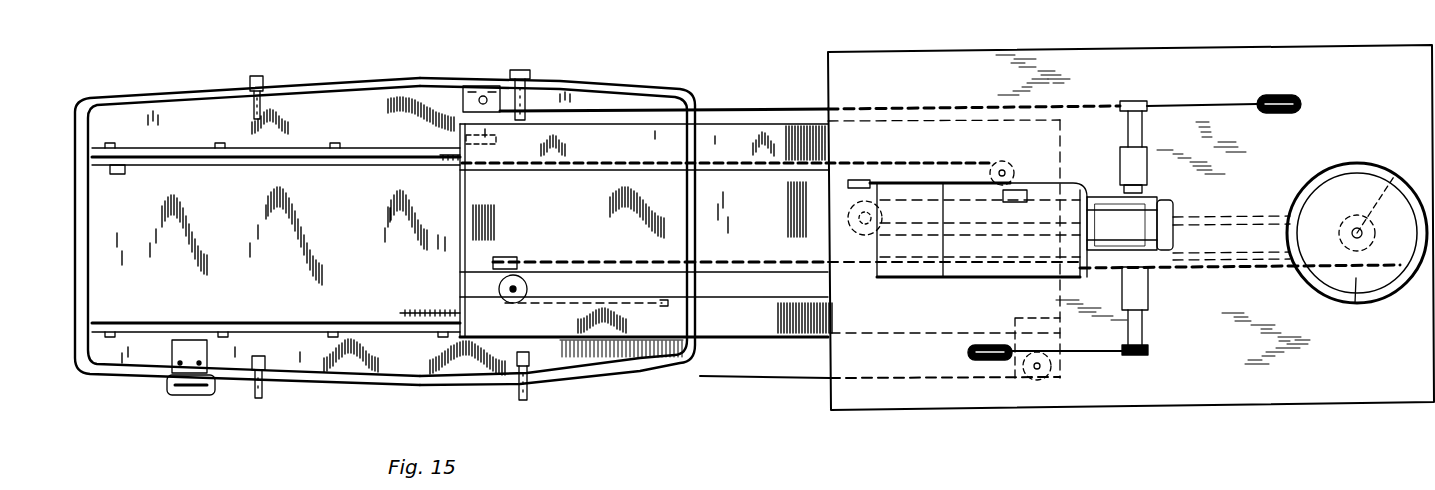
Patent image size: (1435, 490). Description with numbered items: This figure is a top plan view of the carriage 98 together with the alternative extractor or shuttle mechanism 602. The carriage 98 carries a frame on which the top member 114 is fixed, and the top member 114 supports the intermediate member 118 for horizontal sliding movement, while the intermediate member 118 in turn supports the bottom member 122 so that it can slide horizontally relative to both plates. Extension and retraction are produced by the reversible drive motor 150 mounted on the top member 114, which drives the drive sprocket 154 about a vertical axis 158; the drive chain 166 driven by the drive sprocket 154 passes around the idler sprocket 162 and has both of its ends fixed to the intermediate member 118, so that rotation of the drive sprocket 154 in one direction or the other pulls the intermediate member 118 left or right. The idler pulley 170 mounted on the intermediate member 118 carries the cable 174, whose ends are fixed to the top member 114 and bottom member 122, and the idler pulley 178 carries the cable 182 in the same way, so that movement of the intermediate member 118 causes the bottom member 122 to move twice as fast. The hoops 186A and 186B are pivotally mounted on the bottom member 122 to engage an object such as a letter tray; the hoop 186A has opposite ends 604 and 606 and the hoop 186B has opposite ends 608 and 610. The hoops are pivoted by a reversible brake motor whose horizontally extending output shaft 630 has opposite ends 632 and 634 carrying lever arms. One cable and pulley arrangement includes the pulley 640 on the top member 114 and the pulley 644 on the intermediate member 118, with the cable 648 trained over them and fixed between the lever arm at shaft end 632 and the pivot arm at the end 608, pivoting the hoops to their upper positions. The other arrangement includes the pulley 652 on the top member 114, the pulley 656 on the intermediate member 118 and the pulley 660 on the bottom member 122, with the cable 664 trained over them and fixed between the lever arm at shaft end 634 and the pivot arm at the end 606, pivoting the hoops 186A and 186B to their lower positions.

The hoop 186A is at (152, 96).
The hoop 186B is at (650, 82).
The bottom member 122 is at (270, 267).
The cable 182 is at (380, 172).
The end of hoop 186A 604 is at (265, 78).
The end of hoop 186B 608 is at (533, 69).
The pulley 644 is at (478, 88).
The end of hoop 186A 606 is at (254, 400).
The end of hoop 186B 610 is at (525, 403).
The pulley 660 is at (188, 397).
The intermediate member 118 is at (782, 328).
The cable 174 is at (758, 290).
The idler pulley 170 is at (498, 274).
The drive chain 166 is at (622, 262).
The cable 648 is at (770, 106).
The cable 664 is at (792, 384).
The shuttle mechanism 602 is at (944, 52).
The carriage 98 is at (922, 422).
The top member 114 is at (1256, 50).
The idler sprocket 162 is at (846, 219).
The idler pulley 178 is at (1016, 147).
The shaft end 632 is at (1150, 60).
The output shaft 630 is at (1150, 292).
The shaft end 634 is at (1136, 358).
The pulley 652 is at (966, 352).
The pulley 656 is at (1040, 383).
The pulley 640 is at (1296, 97).
The drive motor 150 is at (1345, 183).
The vertical axis 158 is at (1394, 172).
The drive sprocket 154 is at (1358, 300).